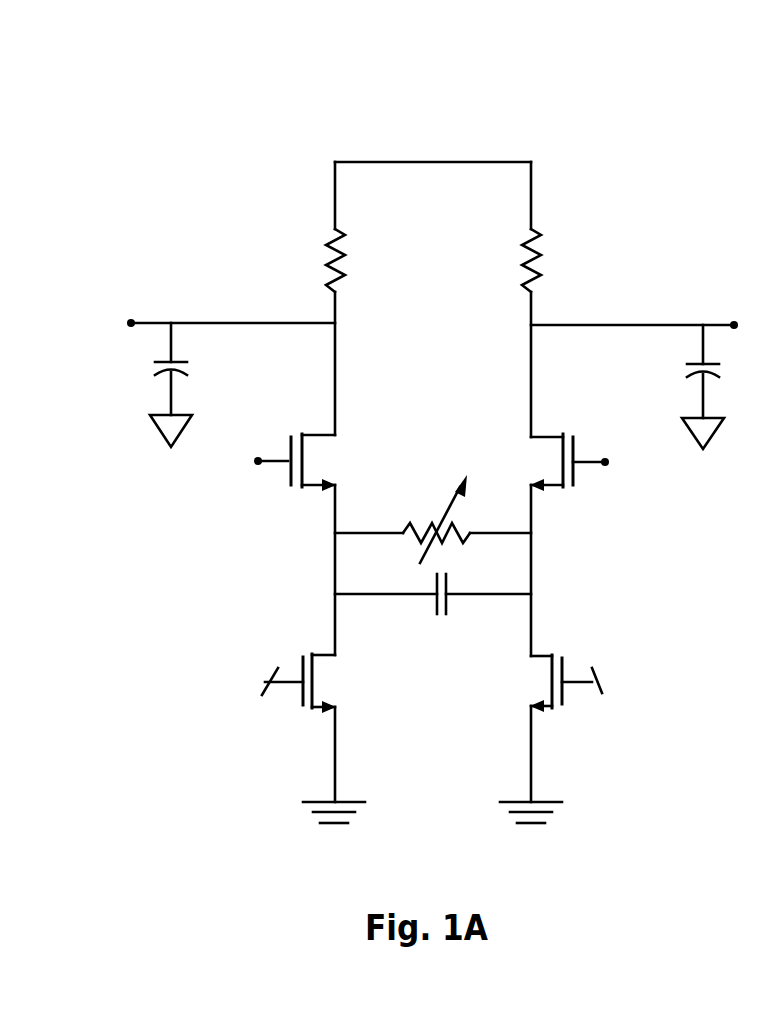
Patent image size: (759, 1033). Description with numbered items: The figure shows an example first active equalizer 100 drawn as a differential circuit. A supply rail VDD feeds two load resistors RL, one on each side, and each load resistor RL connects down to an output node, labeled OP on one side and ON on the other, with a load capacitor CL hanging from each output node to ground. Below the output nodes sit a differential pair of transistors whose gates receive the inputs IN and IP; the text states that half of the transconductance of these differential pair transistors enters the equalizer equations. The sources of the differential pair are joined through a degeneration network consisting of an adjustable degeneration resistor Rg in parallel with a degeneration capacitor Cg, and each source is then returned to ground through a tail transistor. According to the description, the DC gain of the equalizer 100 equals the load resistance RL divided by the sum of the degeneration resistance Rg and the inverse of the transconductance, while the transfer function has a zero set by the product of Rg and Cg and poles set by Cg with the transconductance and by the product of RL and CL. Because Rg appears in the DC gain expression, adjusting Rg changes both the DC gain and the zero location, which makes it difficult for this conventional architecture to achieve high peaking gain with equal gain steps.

The first active equalizer 100 is at (180, 102).
The element VDD is at (433, 175).
The load resistor RL is at (435, 260).
The load capacitor CL is at (437, 386).
The element OP is at (231, 311).
The element ON is at (634, 312).
The element IN is at (272, 462).
The element IP is at (589, 462).
The degeneration resistor Rg is at (433, 519).
The degeneration capacitor Cg is at (433, 605).